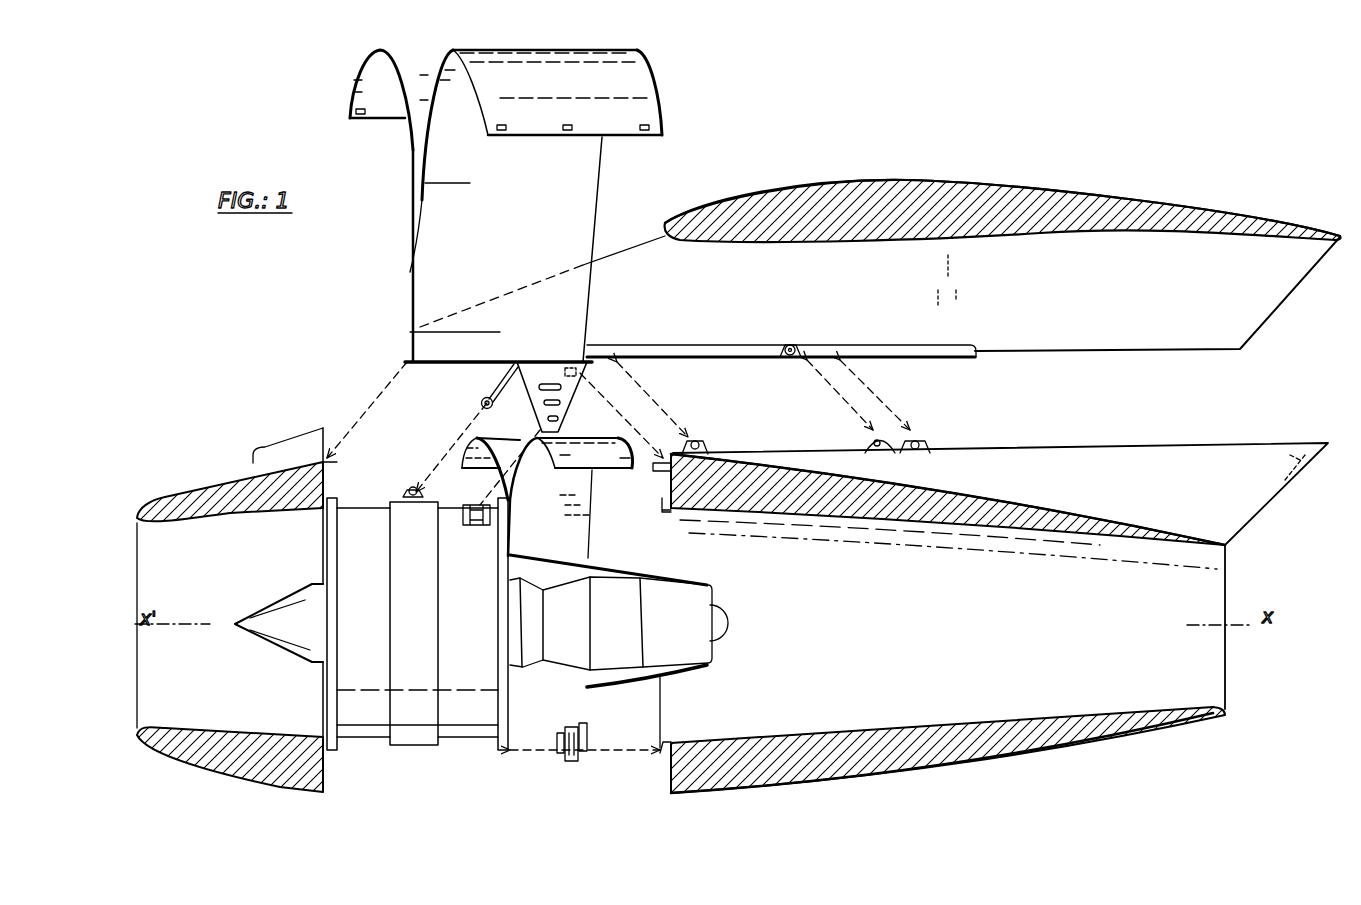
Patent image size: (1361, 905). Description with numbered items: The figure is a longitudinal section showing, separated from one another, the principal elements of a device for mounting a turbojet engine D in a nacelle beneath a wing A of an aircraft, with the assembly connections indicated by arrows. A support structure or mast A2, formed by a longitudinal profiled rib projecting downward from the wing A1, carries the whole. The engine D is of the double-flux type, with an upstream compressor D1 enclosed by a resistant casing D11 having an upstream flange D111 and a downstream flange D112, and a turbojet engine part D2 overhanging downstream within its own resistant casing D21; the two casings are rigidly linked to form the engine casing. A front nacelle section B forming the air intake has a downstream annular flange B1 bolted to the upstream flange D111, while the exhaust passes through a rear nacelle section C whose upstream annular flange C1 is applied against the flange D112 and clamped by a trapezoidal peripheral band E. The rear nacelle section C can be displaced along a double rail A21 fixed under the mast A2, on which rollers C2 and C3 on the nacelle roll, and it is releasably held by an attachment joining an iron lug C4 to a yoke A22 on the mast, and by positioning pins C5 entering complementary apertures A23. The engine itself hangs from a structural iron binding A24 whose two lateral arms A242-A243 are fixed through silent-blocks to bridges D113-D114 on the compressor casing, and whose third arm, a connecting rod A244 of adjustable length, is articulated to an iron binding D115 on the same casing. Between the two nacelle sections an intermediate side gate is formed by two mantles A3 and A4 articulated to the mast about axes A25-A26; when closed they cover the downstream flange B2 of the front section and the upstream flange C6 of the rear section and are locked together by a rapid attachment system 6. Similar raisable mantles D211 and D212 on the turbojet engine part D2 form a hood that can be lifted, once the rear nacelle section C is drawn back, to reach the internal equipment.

The wing A is at (903, 180).
The wing A1 is at (912, 224).
The support structure or mast member A2 is at (805, 298).
The double rail A21 is at (682, 352).
The yoke A22 is at (793, 356).
The aperture A23 is at (580, 372).
The structural iron binding A24 is at (575, 402).
The lateral arms A242-A243 is at (560, 368).
The third arm (connecting rod) A244 is at (480, 398).
The articulation axes A25-A26 is at (435, 358).
The mantle A3 is at (630, 80).
The mantle A4 is at (360, 72).
The rapid attachment system 6 is at (632, 132).
The front nacelle section B is at (242, 506).
The downstream annular flange B1 is at (320, 735).
The downstream flange B2 is at (330, 790).
The rear nacelle section C is at (975, 640).
The annular flange C1 is at (667, 747).
The roller C2 is at (700, 440).
The roller C3 is at (918, 438).
The iron lug C4 is at (871, 432).
The positioning pin C5 is at (660, 471).
The upstream flange C6 is at (655, 792).
The turbojet engine D is at (496, 604).
The compressor D1 is at (388, 615).
The compressor casing D11 is at (381, 624).
The upstream flange D111 is at (330, 529).
The downstream flange D112 is at (502, 752).
The bridges D113-D114 is at (462, 500).
The iron binding D115 is at (414, 488).
The turbojet engine part D2 is at (568, 576).
The resistant casing D21 is at (568, 537).
The raisable articulated mantle D211 is at (573, 510).
The raisable articulated mantle D212 is at (508, 500).
The peripheral band E is at (572, 756).